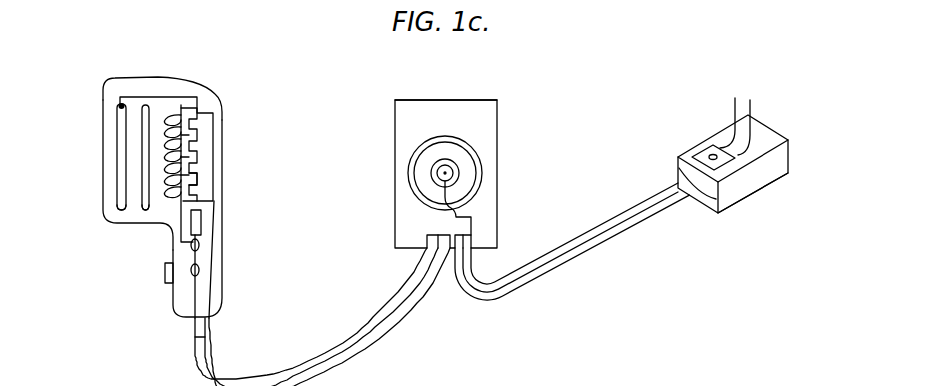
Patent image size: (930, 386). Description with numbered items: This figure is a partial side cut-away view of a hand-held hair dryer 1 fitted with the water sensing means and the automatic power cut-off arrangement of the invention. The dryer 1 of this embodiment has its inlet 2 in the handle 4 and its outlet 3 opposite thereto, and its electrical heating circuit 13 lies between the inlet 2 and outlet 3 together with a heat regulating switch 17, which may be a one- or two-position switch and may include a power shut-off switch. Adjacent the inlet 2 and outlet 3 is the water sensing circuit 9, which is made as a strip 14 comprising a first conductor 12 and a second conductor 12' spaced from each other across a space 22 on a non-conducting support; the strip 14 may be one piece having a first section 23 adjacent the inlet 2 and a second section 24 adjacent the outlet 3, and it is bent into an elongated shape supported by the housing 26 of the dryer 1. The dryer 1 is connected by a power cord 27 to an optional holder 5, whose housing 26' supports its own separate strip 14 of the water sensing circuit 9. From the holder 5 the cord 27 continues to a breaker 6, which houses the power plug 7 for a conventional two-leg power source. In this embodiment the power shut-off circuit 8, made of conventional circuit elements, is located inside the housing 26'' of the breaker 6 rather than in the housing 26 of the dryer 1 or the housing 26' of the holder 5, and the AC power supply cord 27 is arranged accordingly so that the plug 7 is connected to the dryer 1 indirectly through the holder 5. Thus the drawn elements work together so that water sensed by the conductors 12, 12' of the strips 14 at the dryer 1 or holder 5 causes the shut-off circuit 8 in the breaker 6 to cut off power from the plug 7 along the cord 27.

The hair dryer 1 is at (230, 152).
The inlet 2 is at (173, 176).
The outlet 3 is at (101, 140).
The handle 4 is at (228, 228).
The holder 5 is at (497, 148).
The breaker 6 is at (737, 150).
The power plug 7 is at (737, 95).
The power shut-off circuit 8 is at (698, 143).
The water sensing circuit 9 is at (197, 181).
The first conductor 12 is at (320, 123).
The second conductor 12' is at (332, 212).
The electrical heating circuit 13 is at (167, 116).
The strip 14 is at (478, 202).
The heat regulating switch 17 is at (165, 278).
The space 22 is at (137, 155).
The first section 23 is at (123, 212).
The second section 24 is at (197, 137).
The housing 26 is at (162, 78).
The housing 26' is at (452, 83).
The housing 26'' is at (753, 207).
The power cord 27 is at (596, 249).